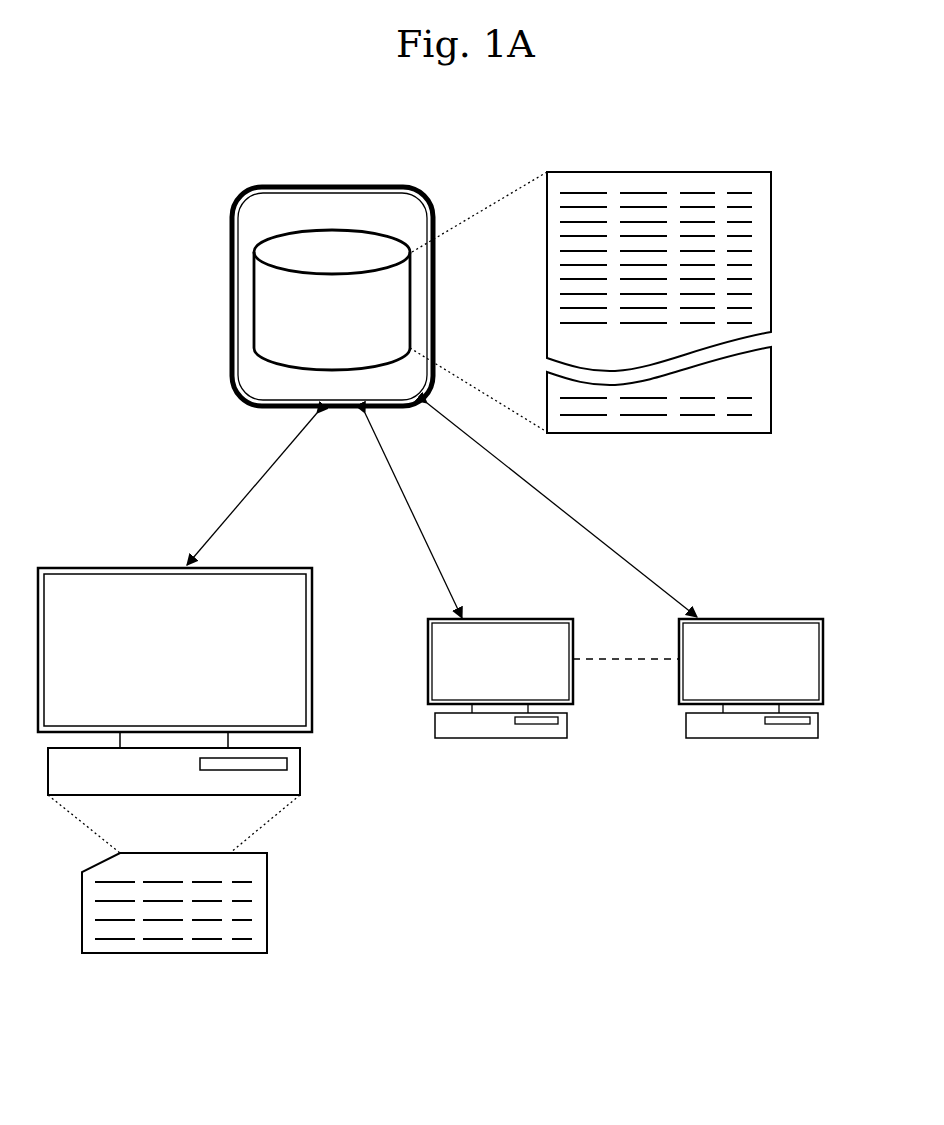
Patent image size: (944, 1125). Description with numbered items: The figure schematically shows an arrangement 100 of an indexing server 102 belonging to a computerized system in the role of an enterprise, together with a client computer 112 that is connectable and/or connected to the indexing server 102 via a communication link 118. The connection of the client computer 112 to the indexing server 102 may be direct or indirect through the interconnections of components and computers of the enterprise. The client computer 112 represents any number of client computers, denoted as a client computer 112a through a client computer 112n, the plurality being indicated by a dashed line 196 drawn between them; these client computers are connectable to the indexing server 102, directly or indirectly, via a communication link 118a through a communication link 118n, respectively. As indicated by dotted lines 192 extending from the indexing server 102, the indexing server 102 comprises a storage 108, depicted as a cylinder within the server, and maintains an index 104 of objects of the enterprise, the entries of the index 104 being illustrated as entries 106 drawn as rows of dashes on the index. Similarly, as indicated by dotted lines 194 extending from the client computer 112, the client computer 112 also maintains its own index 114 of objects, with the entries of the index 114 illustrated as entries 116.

The arrangement 100 is at (122, 312).
The indexing server 102 is at (231, 214).
The index 104 is at (771, 275).
The entries 106 is at (752, 182).
The storage 108 is at (254, 278).
The client computer 112 is at (96, 568).
The client computer 112a is at (508, 619).
The client computer 112n is at (815, 619).
The index 114 is at (267, 920).
The entries 116 is at (118, 875).
The communication link 118 is at (250, 490).
The communication link 118a is at (428, 540).
The communication link 118n is at (638, 553).
The dotted lines 192 is at (506, 200).
The dotted lines 194 is at (88, 825).
The dashed line 196 is at (619, 660).